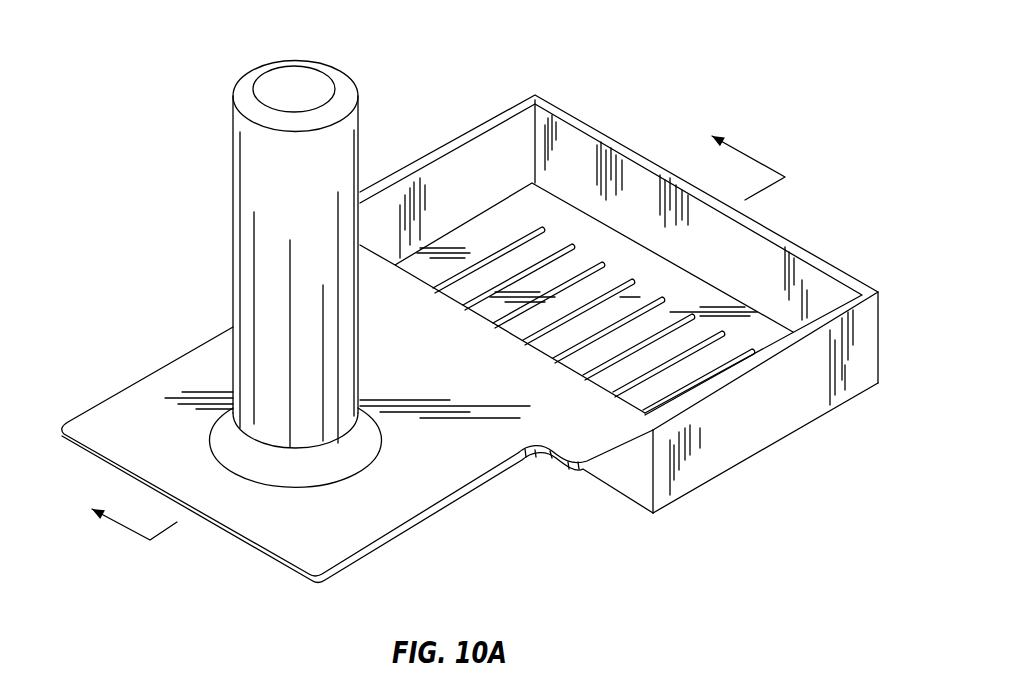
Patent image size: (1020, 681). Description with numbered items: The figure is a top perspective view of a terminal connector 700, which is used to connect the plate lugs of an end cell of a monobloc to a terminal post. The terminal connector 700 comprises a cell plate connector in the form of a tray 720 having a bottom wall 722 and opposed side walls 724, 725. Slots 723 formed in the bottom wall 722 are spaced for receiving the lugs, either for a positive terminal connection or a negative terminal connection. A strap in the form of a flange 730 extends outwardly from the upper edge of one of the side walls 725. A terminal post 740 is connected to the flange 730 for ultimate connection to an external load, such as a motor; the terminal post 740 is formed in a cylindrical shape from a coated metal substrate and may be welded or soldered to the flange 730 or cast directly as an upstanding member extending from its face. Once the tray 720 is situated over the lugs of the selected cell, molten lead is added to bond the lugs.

The terminal connector 700 is at (722, 46).
The tray 720 is at (468, 128).
The bottom wall 722 is at (703, 297).
The slots 723 is at (687, 353).
The side wall 724 is at (497, 160).
The side wall 725 is at (582, 163).
The flange 730 is at (378, 503).
The terminal post 740 is at (288, 61).